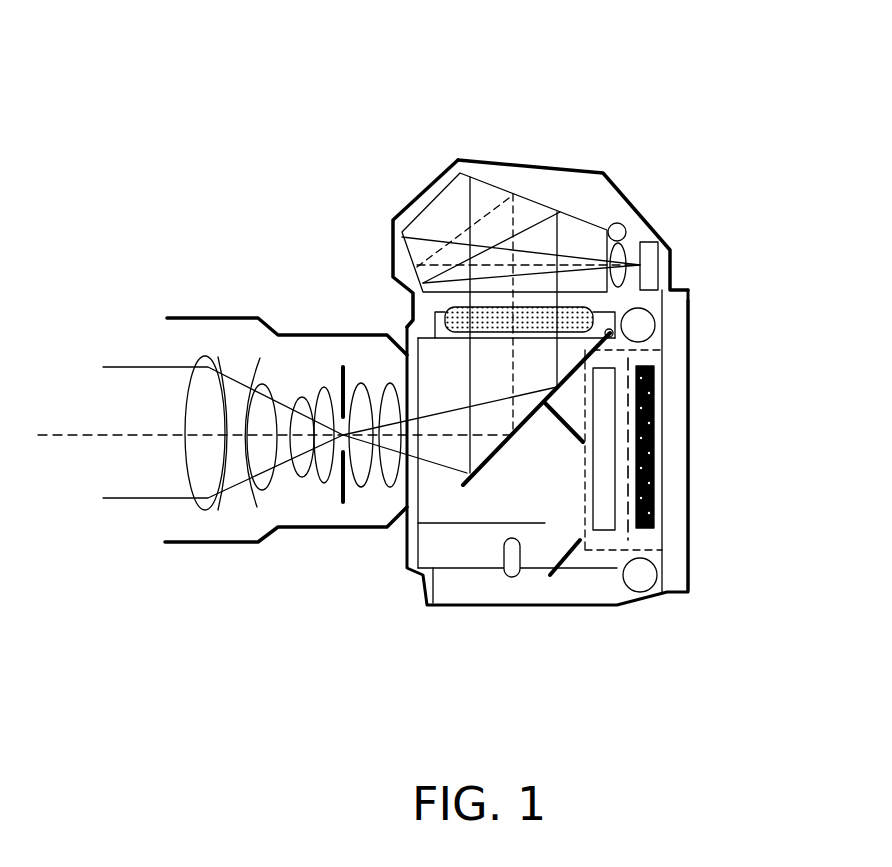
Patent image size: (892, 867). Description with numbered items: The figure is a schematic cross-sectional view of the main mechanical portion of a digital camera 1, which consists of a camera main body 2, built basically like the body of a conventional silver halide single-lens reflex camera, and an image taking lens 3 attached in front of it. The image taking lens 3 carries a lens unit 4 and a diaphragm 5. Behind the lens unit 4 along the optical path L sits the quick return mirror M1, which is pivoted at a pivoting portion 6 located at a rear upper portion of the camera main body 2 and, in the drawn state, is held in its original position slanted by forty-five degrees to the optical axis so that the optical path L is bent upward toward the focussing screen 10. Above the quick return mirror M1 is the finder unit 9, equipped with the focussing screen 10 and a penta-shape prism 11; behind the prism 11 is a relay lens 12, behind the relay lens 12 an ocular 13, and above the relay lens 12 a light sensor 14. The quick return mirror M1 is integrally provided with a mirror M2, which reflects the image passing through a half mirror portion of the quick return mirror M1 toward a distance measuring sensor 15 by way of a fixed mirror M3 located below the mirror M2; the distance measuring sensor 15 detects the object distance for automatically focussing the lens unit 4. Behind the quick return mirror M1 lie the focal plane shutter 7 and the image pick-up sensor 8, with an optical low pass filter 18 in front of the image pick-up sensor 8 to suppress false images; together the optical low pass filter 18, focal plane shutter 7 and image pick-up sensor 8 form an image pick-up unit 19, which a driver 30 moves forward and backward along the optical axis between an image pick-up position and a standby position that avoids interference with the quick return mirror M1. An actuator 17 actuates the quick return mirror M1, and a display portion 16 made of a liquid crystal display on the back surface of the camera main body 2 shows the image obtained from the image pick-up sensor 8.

The digital camera 1 is at (472, 140).
The camera main body 2 is at (672, 611).
The image taking lens 3 is at (212, 302).
The lens unit 4 is at (200, 506).
The diaphragm 5 is at (338, 487).
The pivoting portion 6 is at (613, 334).
The focal plane shutter 7 is at (633, 537).
The image pick-up sensor 8 is at (653, 473).
The finder unit 9 is at (510, 163).
The focussing screen 10 is at (443, 318).
The penta-shape prism 11 is at (430, 197).
The relay lens 12 is at (627, 250).
The ocular 13 is at (653, 256).
The light sensor 14 is at (620, 226).
The distance measuring sensor 15 is at (510, 560).
The display portion 16 is at (688, 452).
The actuator 17 is at (657, 312).
The optical low pass filter 18 is at (607, 530).
The image pick-up unit 19 is at (595, 565).
The driver 30 is at (657, 575).
The optical path L is at (70, 433).
The quick return mirror M1 is at (488, 462).
The mirror M2 is at (562, 419).
The fixed mirror M3 is at (567, 567).